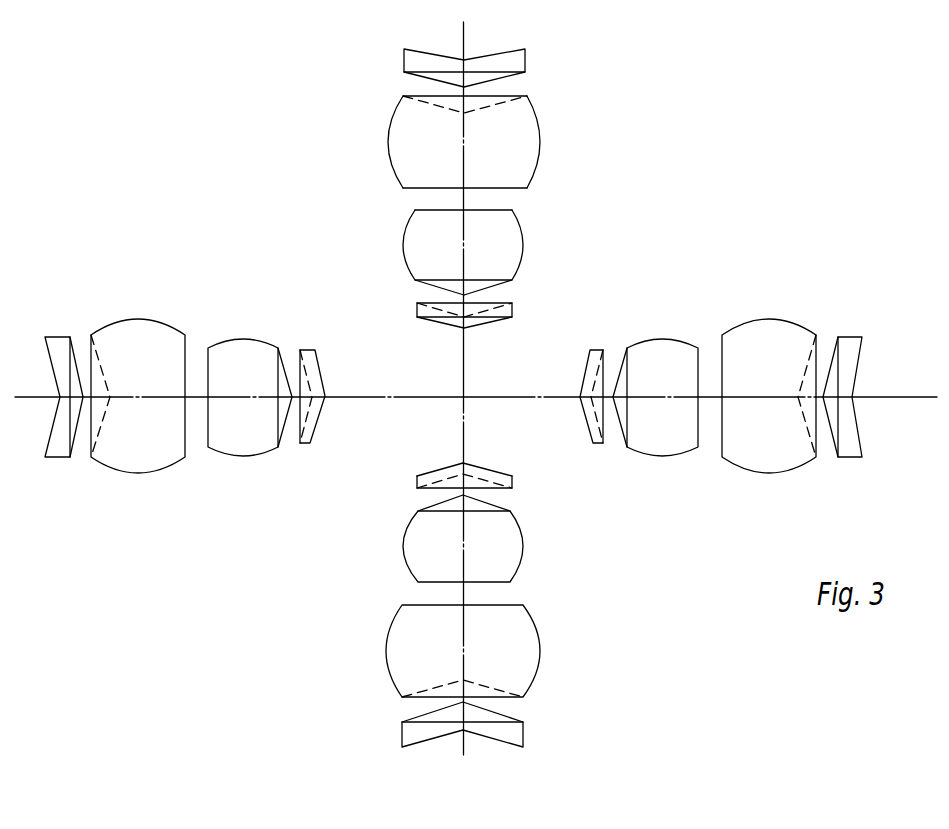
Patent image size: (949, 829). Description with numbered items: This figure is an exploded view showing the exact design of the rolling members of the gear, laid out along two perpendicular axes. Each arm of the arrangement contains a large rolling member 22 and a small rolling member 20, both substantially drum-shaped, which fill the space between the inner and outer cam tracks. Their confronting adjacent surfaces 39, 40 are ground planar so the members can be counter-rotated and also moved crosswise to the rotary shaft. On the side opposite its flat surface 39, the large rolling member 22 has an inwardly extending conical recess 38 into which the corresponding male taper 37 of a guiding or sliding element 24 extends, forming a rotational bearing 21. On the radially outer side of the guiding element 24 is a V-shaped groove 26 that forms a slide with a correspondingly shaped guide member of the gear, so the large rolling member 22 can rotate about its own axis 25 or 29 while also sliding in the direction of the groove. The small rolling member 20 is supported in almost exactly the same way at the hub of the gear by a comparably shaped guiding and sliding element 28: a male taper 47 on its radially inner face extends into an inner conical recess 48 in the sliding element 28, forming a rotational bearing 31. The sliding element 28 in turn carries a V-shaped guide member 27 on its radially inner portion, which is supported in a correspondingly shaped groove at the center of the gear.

The small rolling member 20 is at (493, 242).
The rotational bearing 21 is at (517, 83).
The large rolling member 22 is at (508, 142).
The guiding or sliding element 24 is at (517, 57).
The axis of rotation 25 is at (466, 35).
The V-shaped groove 26 is at (422, 49).
The V-shaped guide member 27 is at (587, 362).
The guiding and sliding element 28 is at (512, 307).
The axis of rotation 29 is at (892, 398).
The rotational bearing 31 is at (503, 297).
The male taper 37 is at (440, 77).
The conical recess 38 is at (443, 101).
The flat surface 39 is at (417, 190).
The flat surface 40 is at (498, 205).
The male taper 47 is at (448, 285).
The inner conical recess 48 is at (448, 308).